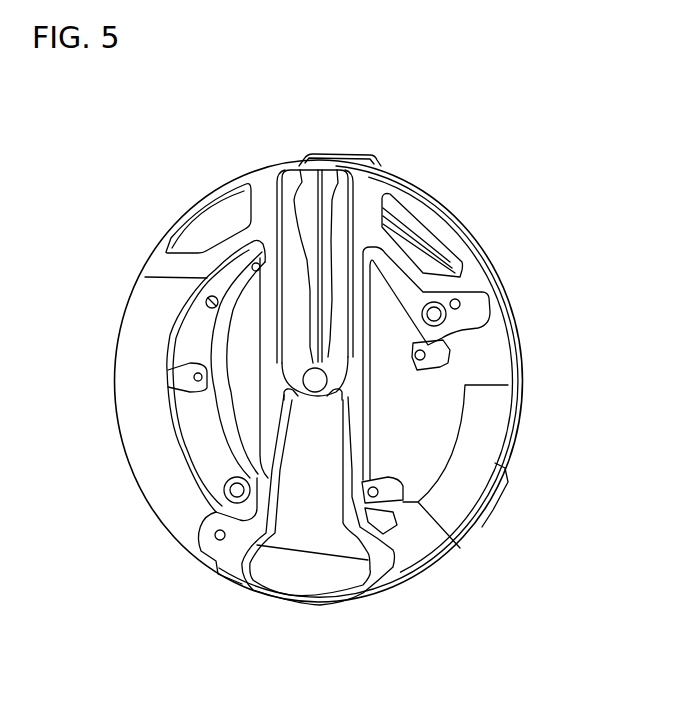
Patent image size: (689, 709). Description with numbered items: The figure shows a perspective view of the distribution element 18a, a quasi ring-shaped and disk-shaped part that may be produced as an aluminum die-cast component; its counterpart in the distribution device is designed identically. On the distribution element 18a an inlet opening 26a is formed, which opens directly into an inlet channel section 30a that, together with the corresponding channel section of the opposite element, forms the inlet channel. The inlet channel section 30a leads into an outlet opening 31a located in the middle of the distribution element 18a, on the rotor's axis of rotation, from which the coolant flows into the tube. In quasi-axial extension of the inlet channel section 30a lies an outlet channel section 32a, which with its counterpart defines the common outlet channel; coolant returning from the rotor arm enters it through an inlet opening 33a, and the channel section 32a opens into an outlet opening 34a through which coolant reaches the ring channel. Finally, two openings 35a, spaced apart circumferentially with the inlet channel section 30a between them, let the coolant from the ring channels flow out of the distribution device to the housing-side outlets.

The distribution element 18a is at (452, 175).
The inlet opening 26a is at (352, 155).
The inlet channel section 30a is at (340, 228).
The outlet opening 31a is at (318, 382).
The outlet channel section 32a is at (302, 485).
The inlet opening 33a is at (328, 405).
The outlet opening 34a is at (292, 568).
The openings 35a is at (218, 222).